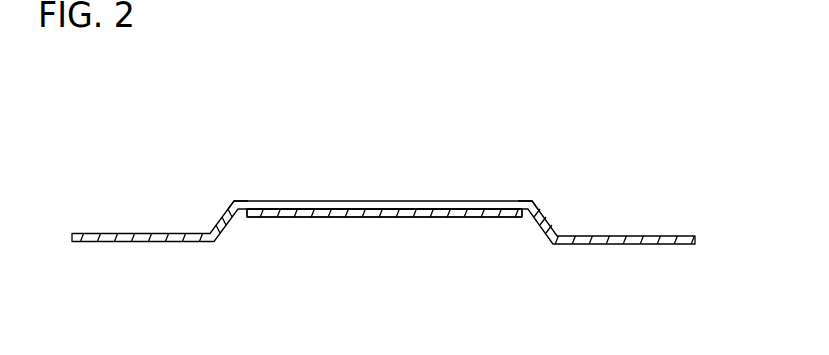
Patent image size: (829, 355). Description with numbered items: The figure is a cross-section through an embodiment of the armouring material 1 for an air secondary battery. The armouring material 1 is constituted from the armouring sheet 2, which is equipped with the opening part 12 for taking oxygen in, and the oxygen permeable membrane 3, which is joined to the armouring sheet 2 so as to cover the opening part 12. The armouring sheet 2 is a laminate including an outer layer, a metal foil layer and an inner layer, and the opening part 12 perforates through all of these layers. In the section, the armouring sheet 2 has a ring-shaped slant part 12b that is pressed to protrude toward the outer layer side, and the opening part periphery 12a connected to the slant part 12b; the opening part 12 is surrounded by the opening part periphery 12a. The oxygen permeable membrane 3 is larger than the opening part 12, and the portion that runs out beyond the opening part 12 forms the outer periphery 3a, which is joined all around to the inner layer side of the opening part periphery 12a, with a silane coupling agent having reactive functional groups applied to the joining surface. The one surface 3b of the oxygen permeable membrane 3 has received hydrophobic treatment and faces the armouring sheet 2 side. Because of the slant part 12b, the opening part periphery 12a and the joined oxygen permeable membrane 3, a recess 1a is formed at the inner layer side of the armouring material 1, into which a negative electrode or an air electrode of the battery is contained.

The armouring material 1 is at (647, 140).
The recess 1a is at (382, 233).
The armouring sheet 2 is at (692, 236).
The oxygen permeable membrane 3 is at (360, 214).
The outer periphery 3a is at (249, 218).
The one surface 3b is at (410, 209).
The opening part 12 is at (493, 201).
The opening part periphery 12a is at (246, 202).
The slant part 12b is at (222, 217).